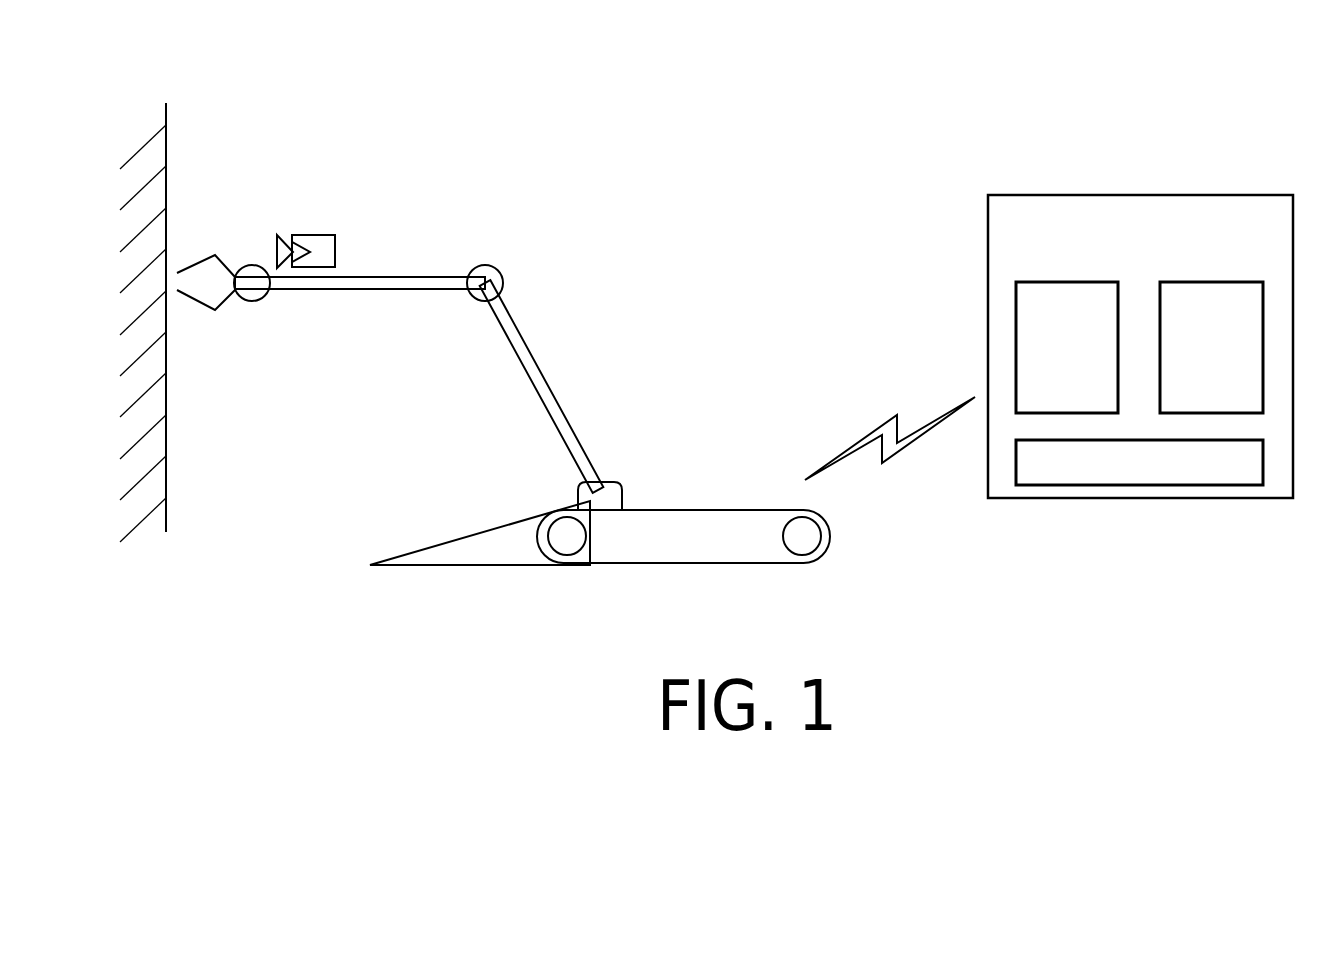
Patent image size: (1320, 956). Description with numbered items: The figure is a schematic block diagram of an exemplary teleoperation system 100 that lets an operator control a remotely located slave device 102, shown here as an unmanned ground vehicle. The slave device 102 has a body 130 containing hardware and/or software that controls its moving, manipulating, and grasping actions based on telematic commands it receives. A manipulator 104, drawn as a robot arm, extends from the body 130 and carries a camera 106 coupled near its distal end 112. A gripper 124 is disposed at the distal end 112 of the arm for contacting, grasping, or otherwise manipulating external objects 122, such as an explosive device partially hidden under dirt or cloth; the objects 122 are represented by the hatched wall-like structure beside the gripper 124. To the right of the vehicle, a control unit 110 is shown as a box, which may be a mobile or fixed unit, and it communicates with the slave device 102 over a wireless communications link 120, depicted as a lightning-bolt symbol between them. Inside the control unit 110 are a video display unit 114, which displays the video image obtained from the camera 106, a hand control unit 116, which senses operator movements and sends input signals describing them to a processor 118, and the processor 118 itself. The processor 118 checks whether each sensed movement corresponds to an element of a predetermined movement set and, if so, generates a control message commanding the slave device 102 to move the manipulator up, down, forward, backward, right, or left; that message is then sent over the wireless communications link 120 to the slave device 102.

The teleoperation system 100 is at (948, 123).
The slave device 102 is at (638, 425).
The manipulator 104 is at (604, 309).
The camera 106 is at (311, 226).
The control unit 110 is at (1159, 273).
The distal end 112 is at (270, 330).
The video display unit 114 is at (1086, 402).
The hand control unit 116 is at (1231, 402).
The processor 118 is at (1209, 474).
The wireless communications link 120 is at (942, 404).
The external objects 122 is at (166, 157).
The gripper 124 is at (224, 330).
The body 130 is at (689, 504).